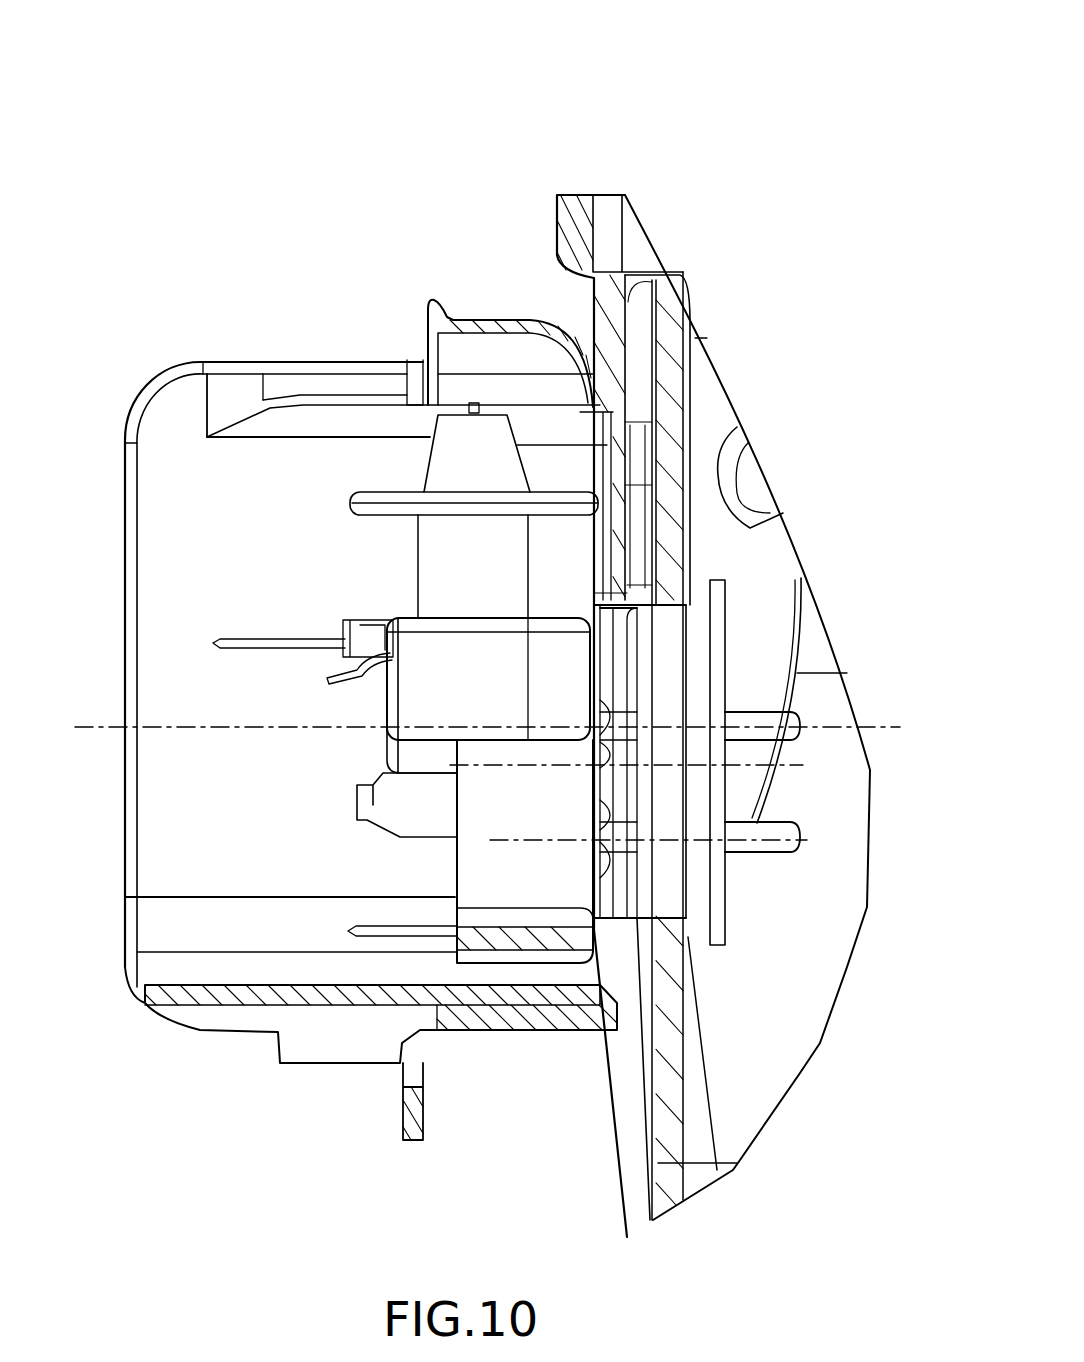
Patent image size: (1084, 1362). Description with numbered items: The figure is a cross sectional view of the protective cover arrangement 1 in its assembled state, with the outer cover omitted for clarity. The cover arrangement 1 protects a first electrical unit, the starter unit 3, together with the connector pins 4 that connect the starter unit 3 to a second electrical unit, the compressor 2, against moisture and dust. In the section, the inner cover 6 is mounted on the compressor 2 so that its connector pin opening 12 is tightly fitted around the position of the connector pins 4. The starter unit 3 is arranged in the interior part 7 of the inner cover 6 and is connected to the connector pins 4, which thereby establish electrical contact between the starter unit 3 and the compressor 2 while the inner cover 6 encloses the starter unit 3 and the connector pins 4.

The protective cover arrangement 1 is at (300, 106).
The compressor 2 is at (573, 227).
The starter unit 3 is at (506, 805).
The connector pins 4 is at (607, 723).
The inner cover 6 is at (495, 313).
The interior part 7 is at (320, 463).
The connector pin opening 12 is at (607, 663).